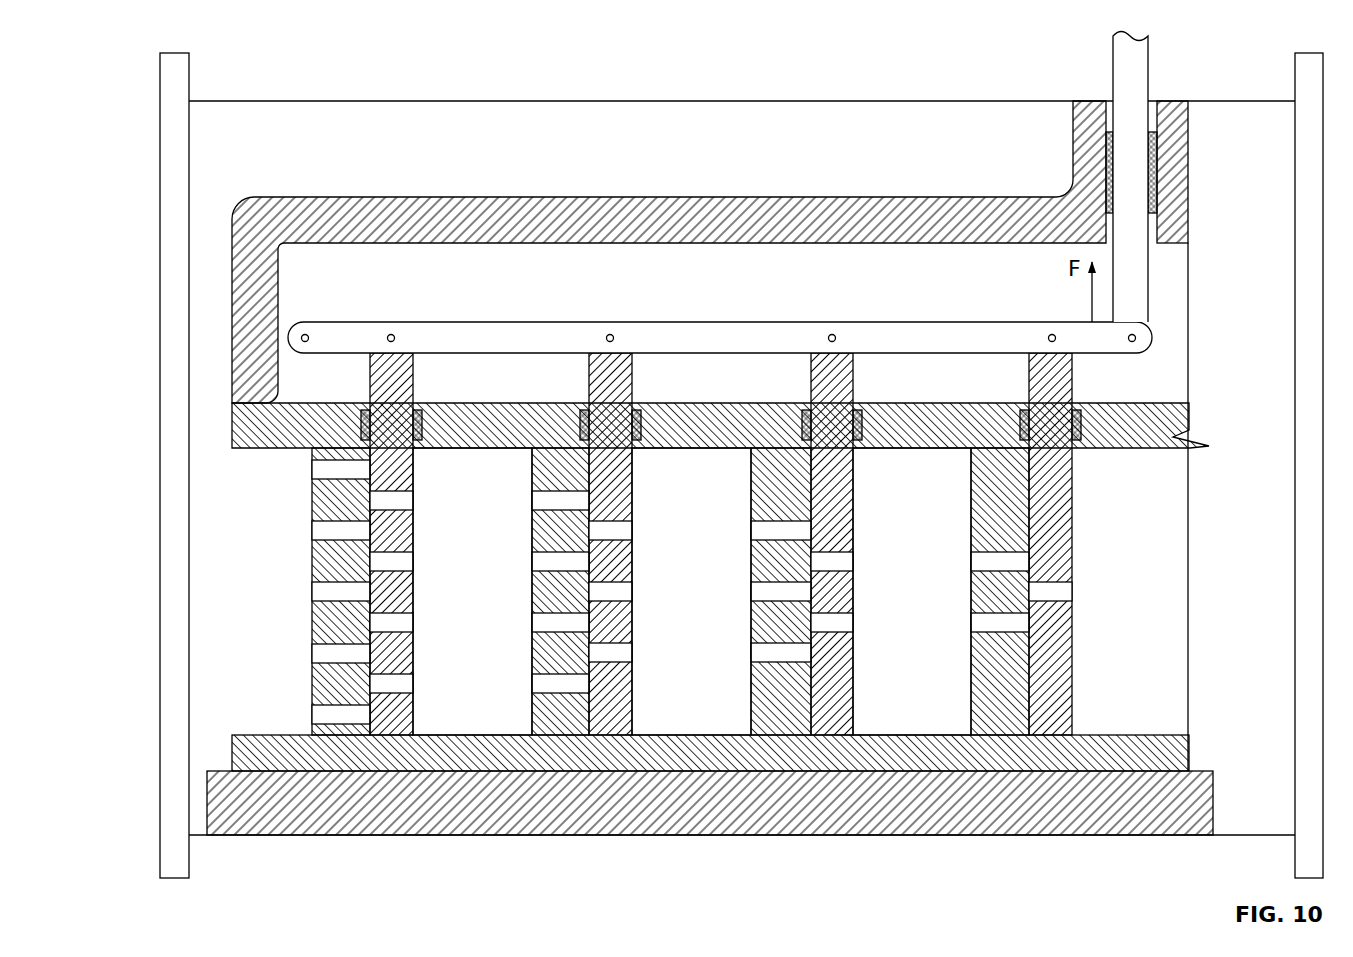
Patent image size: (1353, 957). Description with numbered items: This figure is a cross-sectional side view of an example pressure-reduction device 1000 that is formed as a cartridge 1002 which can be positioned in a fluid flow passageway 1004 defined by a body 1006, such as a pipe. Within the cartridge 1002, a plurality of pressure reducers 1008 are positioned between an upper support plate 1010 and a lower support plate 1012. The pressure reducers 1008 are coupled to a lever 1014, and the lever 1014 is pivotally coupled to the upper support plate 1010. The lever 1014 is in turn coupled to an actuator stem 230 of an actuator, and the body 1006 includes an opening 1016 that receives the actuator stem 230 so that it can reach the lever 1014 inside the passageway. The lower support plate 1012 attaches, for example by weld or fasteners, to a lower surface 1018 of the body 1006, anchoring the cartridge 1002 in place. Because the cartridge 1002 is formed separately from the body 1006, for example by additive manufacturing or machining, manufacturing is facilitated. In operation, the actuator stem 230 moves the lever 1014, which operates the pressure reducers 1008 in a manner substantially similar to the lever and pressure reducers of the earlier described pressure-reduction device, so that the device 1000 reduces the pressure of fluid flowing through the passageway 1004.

The pressure-reduction device 1000 is at (226, 42).
The cartridge 1002 is at (210, 297).
The fluid flow passageway 1004 is at (1163, 668).
The body 1006 is at (168, 640).
The pressure reducers 1008 is at (349, 864).
The upper support plate 1010 is at (1107, 443).
The lower support plate 1012 is at (284, 734).
The lever 1014 is at (488, 322).
The opening 1016 is at (1178, 165).
The lower surface 1018 is at (1127, 773).
The actuator stem 230 is at (1113, 54).